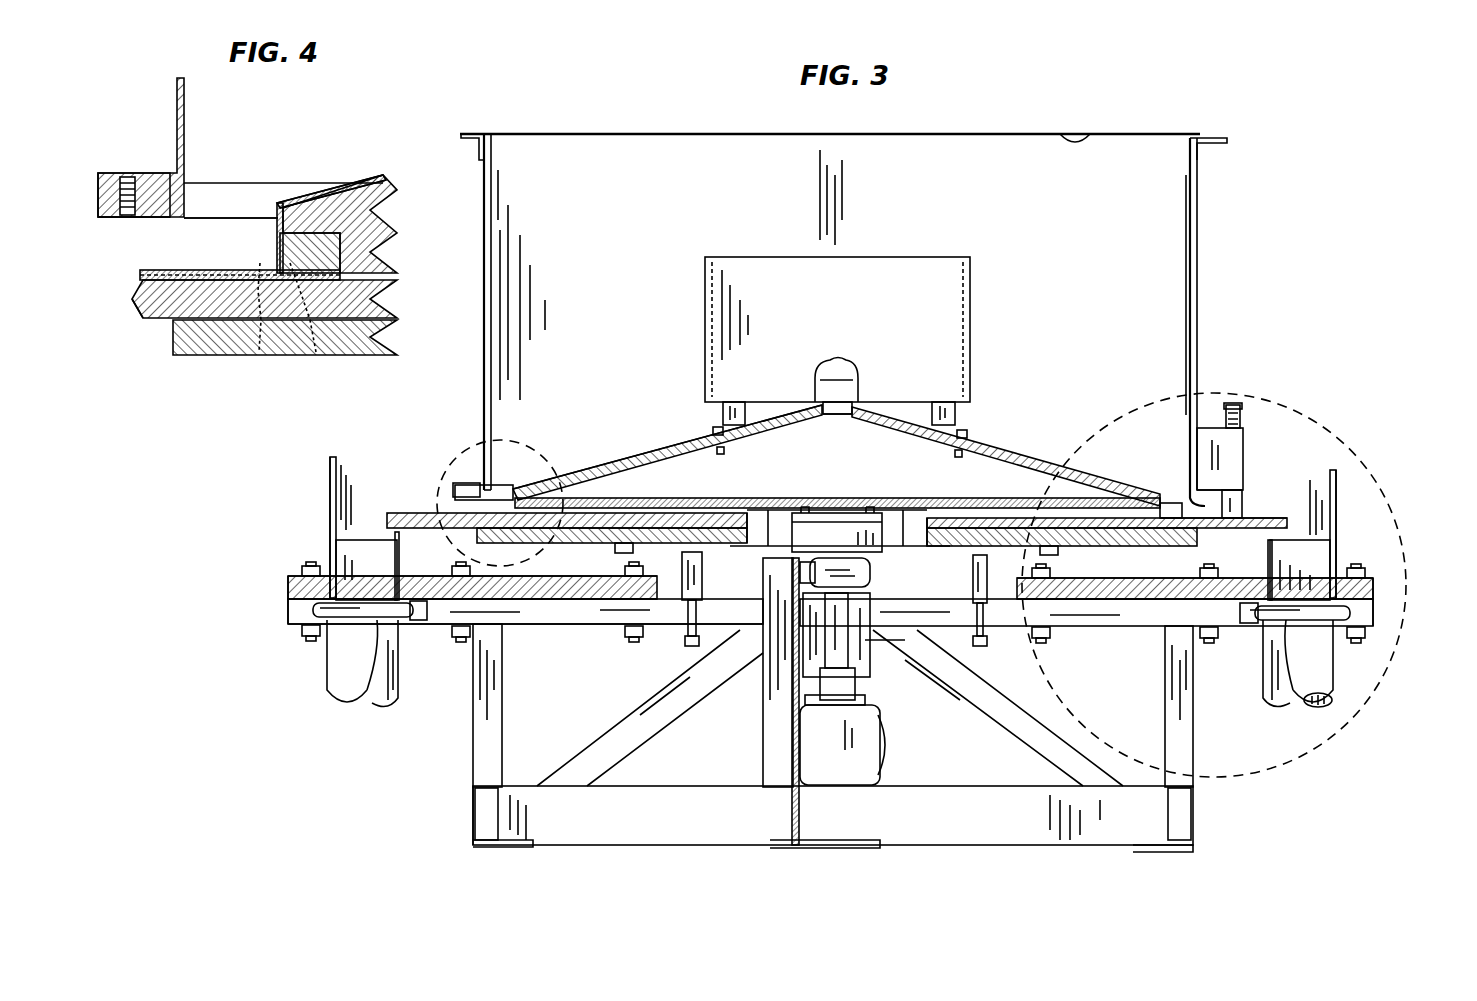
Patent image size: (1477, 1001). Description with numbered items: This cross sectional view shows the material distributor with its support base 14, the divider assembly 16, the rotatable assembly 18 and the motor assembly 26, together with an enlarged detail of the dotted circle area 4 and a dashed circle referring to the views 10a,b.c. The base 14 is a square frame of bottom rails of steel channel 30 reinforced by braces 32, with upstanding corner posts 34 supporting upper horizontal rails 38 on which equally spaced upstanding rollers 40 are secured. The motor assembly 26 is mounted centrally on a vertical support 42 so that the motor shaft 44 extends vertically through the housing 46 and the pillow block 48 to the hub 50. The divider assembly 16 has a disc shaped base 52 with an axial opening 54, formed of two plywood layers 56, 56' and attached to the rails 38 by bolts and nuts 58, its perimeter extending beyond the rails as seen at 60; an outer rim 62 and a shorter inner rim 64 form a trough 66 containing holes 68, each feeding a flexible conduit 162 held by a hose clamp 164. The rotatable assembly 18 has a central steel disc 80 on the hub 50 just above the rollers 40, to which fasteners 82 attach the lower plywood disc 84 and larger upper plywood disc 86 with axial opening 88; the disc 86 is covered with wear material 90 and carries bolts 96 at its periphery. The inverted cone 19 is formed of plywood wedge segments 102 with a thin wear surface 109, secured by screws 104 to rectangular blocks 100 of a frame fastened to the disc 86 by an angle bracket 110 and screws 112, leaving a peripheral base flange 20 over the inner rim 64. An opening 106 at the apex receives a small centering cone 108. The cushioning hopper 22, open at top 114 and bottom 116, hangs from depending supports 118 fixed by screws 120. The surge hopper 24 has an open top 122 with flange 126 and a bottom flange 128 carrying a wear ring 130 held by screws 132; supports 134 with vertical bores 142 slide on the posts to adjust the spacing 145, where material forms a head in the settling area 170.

In FIG. 3, the dotted circle line area 4 is at (456, 456).
In FIG. 3, the FIGS. 10a, 10b, 10c views 10a,b.c is at (1285, 780).
In FIG. 3, the support base 14 is at (462, 795).
In FIG. 3, the material splitter or divider assembly 16 is at (328, 496).
In FIG. 4, the rotatable assembly 18 is at (140, 324).
In FIG. 3, the rotatable assembly 18 is at (596, 490).
In FIG. 4, the inverted cone 19 is at (368, 172).
In FIG. 3, the inverted cone 19 is at (1000, 440).
In FIG. 4, the peripheral base flange 20 is at (163, 266).
In FIG. 3, the peripheral base flange 20 is at (1254, 512).
In FIG. 3, the material receiving cushioning hopper 22 is at (988, 312).
In FIG. 4, the surge hopper 24 is at (184, 88).
In FIG. 3, the surge hopper 24 is at (1210, 240).
In FIG. 3, the motor assembly 26 is at (888, 742).
In FIG. 3, the bottom rails of steel channel 30 is at (745, 845).
In FIG. 3, the braces 32 is at (658, 738).
In FIG. 3, the upstanding corner posts 34 is at (473, 712).
In FIG. 3, the upper horizontal rails 38 is at (525, 626).
In FIG. 3, the upstanding rollers 40 is at (704, 562).
In FIG. 3, the vertical support 42 is at (763, 689).
In FIG. 3, the motor shaft 44 is at (876, 677).
In FIG. 3, the housing 46 is at (945, 663).
In FIG. 3, the pillow block 48 is at (871, 574).
In FIG. 3, the hub 50 is at (838, 528).
In FIG. 3, the disc shaped base 52 is at (284, 600).
In FIG. 3, the axial opening 54 is at (681, 602).
In FIG. 3, the plywood layer 56 is at (830, 561).
In FIG. 3, the plywood layer 56' is at (830, 633).
In FIG. 3, the bolts and nuts 58 is at (308, 564).
In FIG. 3, the perimeter extension of base 60 is at (305, 640).
In FIG. 3, the upstanding circular outer rim 62 is at (340, 458).
In FIG. 3, the inner rim 64 is at (400, 548).
In FIG. 3, the trough 66 is at (356, 520).
In FIG. 3, the holes 68 is at (362, 580).
In FIG. 3, the central steel disc 80 is at (758, 545).
In FIG. 3, the fasteners 82 is at (630, 553).
In FIG. 4, the lower plywood disc 84 is at (214, 350).
In FIG. 3, the lower plywood disc 84 is at (560, 544).
In FIG. 4, the upper plywood disc 86 is at (132, 306).
In FIG. 3, the upper plywood disc 86 is at (722, 512).
In FIG. 3, the axial opening 88 is at (903, 518).
In FIG. 4, the wear surface material 90 is at (157, 292).
In FIG. 3, the wear surface material 90 is at (656, 510).
In FIG. 3, the bolt 96 is at (1263, 515).
In FIG. 4, the rectangular blocks 100 is at (338, 258).
In FIG. 3, the rectangular blocks 100 is at (1176, 504).
In FIG. 4, the plywood wedge segments 102 is at (368, 198).
In FIG. 4, the screws 104 is at (322, 190).
In FIG. 3, the opening 106 is at (838, 418).
In FIG. 3, the small centering cone 108 is at (850, 375).
In FIG. 4, the thin wear surface 109 is at (375, 178).
In FIG. 4, the angle bracket 110 is at (277, 243).
In FIG. 4, the screws 112 is at (259, 352).
In FIG. 3, the open top of hopper 22 114 is at (815, 256).
In FIG. 3, the open bottom of hopper 22 116 is at (762, 398).
In FIG. 3, the depending supports 118 is at (722, 420).
In FIG. 3, the screws 120 is at (712, 428).
In FIG. 3, the open top of surge hopper 122 is at (1075, 135).
In FIG. 3, the top peripheral flange 126 is at (1212, 152).
In FIG. 4, the bottom peripheral flange 128 is at (170, 165).
In FIG. 3, the bottom peripheral flange 128 is at (462, 483).
In FIG. 4, the wear ring 130 is at (114, 219).
In FIG. 3, the wear ring 130 is at (455, 491).
In FIG. 4, the screws 132 is at (128, 176).
In FIG. 3, the supports 134 is at (1248, 420).
In FIG. 3, the vertical bore 142 is at (1197, 440).
In FIG. 4, the spacing 145 is at (204, 247).
In FIG. 3, the spacing 145 is at (496, 494).
In FIG. 3, the flexible conduit 162 is at (330, 670).
In FIG. 3, the hose clamp 164 is at (374, 695).
In FIG. 4, the settling area 170 is at (248, 200).